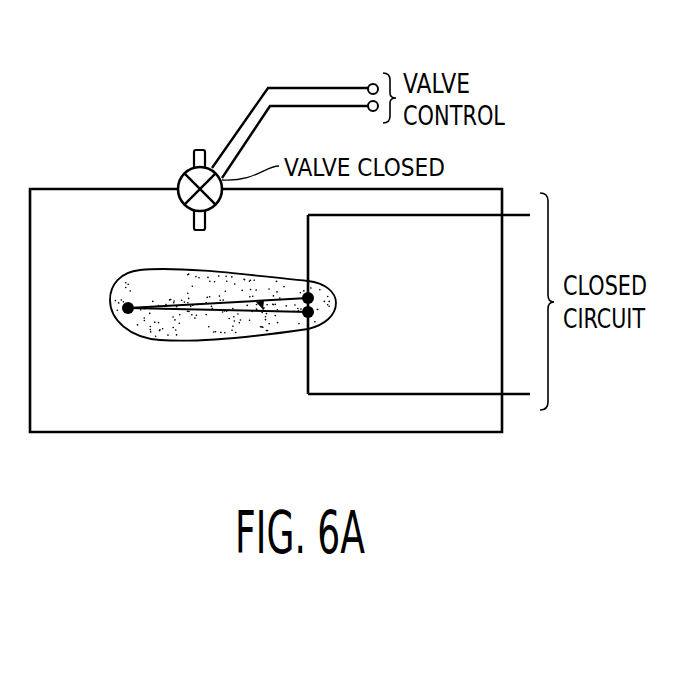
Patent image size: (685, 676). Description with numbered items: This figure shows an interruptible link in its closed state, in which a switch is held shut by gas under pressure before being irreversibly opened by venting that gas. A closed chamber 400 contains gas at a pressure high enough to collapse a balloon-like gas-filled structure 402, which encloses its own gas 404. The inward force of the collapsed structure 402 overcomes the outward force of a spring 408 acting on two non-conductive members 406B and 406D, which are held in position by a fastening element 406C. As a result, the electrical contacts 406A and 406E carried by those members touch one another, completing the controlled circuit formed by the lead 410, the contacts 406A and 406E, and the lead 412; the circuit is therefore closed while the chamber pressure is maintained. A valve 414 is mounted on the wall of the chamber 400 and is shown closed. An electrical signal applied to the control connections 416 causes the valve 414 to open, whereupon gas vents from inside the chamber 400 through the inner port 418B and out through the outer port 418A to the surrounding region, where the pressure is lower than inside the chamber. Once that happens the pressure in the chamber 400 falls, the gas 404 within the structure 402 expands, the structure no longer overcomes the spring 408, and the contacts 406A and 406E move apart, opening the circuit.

The closed chamber 400 is at (127, 434).
The balloon-like gas-filled structure 402 is at (157, 340).
The gas 404 is at (183, 337).
The electrical contact 406A is at (313, 294).
The non-conductive member 406B is at (212, 300).
The fastening element 406C is at (112, 312).
The non-conductive member 406D is at (238, 316).
The electrical contact 406E is at (313, 317).
The spring 408 is at (263, 300).
The controlled circuit lead 410 is at (512, 214).
The controlled circuit lead 412 is at (512, 397).
The valve 414 is at (178, 182).
The valve control lines 416 is at (305, 87).
The valve outlet port 418A is at (200, 149).
The valve inlet port 418B is at (192, 221).